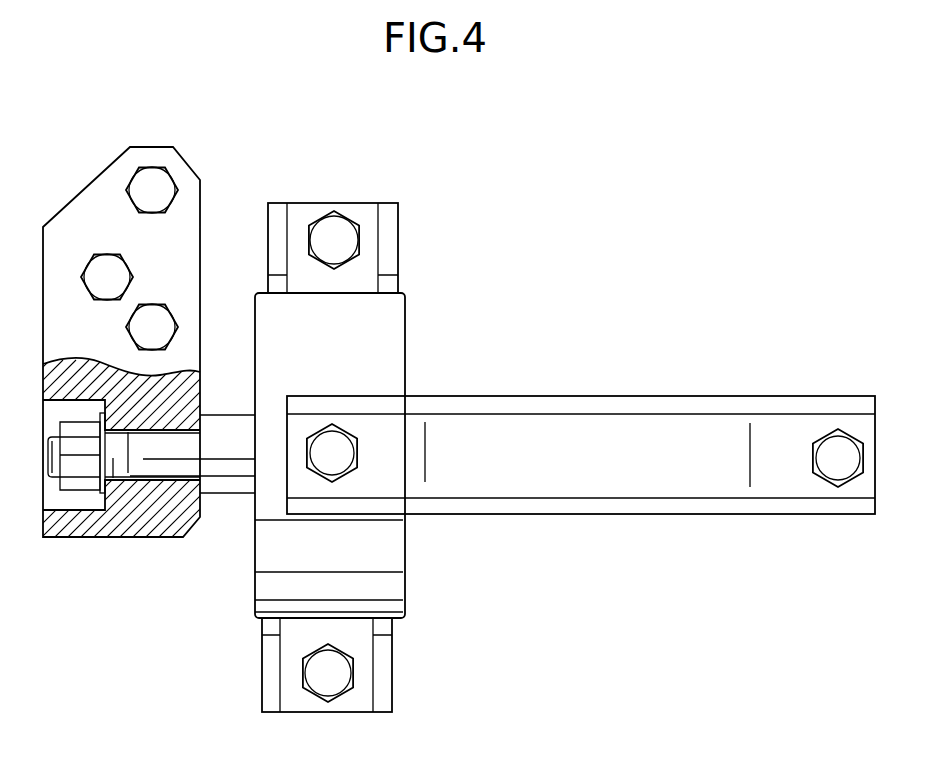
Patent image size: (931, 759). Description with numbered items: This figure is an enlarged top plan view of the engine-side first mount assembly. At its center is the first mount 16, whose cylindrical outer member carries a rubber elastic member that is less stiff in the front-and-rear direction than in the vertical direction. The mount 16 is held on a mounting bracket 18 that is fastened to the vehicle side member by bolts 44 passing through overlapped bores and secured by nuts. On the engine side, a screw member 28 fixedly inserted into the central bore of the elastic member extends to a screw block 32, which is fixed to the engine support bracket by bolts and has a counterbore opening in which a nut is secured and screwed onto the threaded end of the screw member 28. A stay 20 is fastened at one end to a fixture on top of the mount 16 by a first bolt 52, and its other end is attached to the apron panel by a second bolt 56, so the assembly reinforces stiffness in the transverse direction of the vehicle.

The first mount 16 is at (416, 563).
The mounting bracket 18 is at (410, 216).
The stay 20 is at (552, 430).
The screw member 28 is at (233, 483).
The screw block 32 is at (187, 235).
The bolts 44 is at (335, 225).
The first bolt 52 is at (342, 448).
The second bolt 56 is at (832, 447).